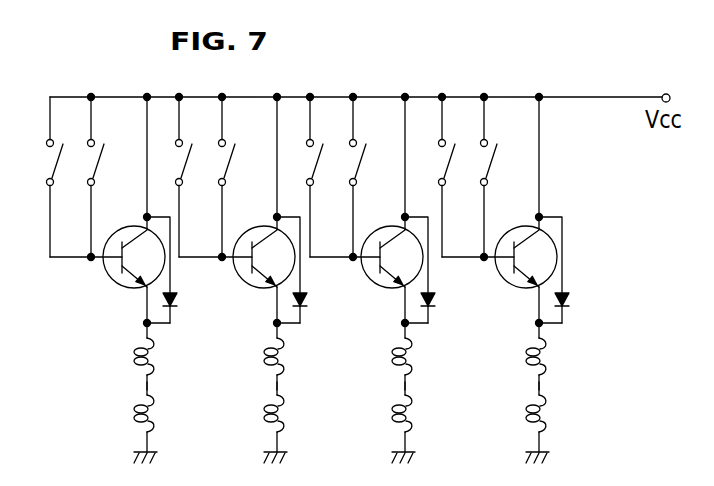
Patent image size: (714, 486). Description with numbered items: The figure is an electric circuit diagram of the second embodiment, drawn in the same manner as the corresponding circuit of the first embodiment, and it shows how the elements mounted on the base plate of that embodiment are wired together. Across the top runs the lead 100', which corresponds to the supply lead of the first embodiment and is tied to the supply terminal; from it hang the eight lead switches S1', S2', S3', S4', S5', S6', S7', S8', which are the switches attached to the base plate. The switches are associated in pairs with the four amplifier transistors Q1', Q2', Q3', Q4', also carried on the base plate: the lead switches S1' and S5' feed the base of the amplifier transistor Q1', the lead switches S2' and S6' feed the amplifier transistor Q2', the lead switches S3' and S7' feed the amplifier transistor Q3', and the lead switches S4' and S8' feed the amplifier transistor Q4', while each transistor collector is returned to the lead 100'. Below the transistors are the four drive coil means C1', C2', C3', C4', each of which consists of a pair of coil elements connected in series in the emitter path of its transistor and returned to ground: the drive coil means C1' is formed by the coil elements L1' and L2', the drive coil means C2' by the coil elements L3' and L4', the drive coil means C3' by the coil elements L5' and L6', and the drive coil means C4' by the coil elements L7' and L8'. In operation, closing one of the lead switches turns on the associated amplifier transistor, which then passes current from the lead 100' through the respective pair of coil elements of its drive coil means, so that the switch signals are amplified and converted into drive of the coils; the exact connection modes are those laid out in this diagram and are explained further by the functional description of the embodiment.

The lead 100' is at (356, 76).
The lead switch S1' is at (72, 177).
The lead switch S2' is at (201, 176).
The lead switch S3' is at (331, 176).
The lead switch S4' is at (463, 176).
The lead switch S5' is at (107, 177).
The lead switch S6' is at (238, 177).
The lead switch S7' is at (369, 177).
The lead switch S8' is at (500, 177).
The amplifier transistor Q1' is at (140, 272).
The amplifier transistor Q2' is at (270, 272).
The amplifier transistor Q3' is at (398, 272).
The amplifier transistor Q4' is at (532, 272).
The coil element L1' is at (157, 359).
The coil element L2' is at (157, 423).
The coil element L3' is at (287, 359).
The coil element L4' is at (287, 423).
The coil element L5' is at (415, 359).
The coil element L6' is at (415, 423).
The coil element L7' is at (549, 359).
The coil element L8' is at (549, 423).
The drive coil means C1' is at (125, 382).
The drive coil means C2' is at (255, 382).
The drive coil means C3' is at (383, 382).
The drive coil means C4' is at (517, 382).